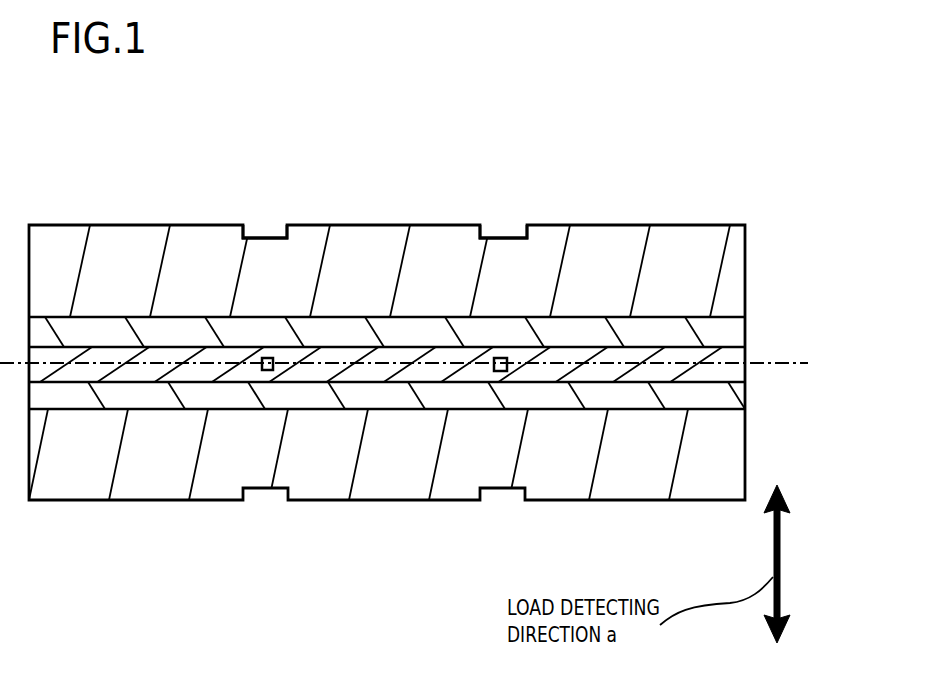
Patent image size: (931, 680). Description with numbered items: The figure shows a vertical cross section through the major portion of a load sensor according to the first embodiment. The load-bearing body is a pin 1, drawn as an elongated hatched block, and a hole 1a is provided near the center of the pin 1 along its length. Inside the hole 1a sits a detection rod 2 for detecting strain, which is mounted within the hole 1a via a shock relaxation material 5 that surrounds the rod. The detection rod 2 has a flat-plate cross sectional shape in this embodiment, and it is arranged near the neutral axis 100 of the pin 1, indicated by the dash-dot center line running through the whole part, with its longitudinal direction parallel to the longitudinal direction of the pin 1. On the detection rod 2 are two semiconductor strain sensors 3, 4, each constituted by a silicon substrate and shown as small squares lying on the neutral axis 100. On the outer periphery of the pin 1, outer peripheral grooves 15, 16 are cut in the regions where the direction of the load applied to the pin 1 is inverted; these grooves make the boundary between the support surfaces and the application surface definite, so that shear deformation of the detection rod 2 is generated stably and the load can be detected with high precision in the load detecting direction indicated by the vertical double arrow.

The pin 1 is at (108, 260).
The hole 1a is at (127, 317).
The detection rod 2 is at (335, 357).
The semiconductor strain sensor 3 is at (268, 357).
The semiconductor strain sensor 4 is at (502, 357).
The shock relaxation material 5 is at (413, 330).
The outer peripheral groove 15 is at (266, 357).
The outer peripheral groove 16 is at (505, 237).
The neutral axis 100 is at (780, 363).